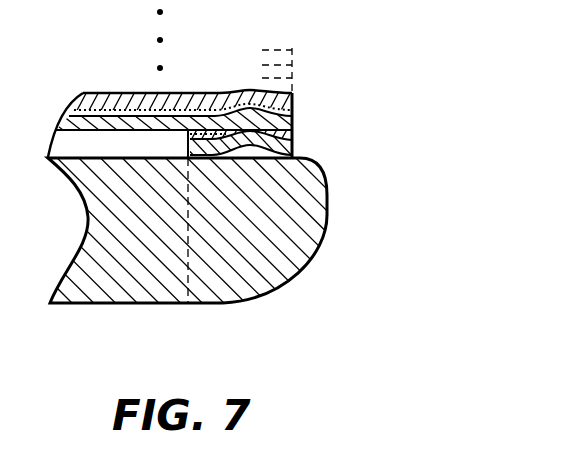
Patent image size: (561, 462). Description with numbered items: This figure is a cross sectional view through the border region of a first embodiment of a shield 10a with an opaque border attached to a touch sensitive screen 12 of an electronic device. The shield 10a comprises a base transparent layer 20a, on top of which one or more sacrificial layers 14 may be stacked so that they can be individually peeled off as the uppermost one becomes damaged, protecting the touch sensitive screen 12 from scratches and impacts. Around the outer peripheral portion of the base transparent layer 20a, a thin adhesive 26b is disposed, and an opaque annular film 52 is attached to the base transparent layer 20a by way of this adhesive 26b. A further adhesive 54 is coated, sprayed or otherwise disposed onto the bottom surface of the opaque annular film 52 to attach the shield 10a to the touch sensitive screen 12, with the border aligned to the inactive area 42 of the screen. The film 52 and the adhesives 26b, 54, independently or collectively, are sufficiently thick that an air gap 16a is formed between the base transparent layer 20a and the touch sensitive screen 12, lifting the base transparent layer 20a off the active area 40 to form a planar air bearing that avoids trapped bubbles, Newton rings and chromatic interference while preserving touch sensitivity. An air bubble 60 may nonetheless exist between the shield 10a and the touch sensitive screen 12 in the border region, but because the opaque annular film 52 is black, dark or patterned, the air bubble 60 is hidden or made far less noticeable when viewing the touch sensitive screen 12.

The shield 10a is at (405, 103).
The touch sensitive screen 12 is at (405, 160).
The sacrificial layer 14 is at (222, 98).
The air gap 16a is at (105, 143).
The base transparent layer 20a is at (295, 122).
The adhesive 26b is at (295, 130).
The active area 40 is at (137, 268).
The inactive area 42 is at (278, 249).
The opaque annular film 52 is at (295, 148).
The adhesive 54 is at (188, 156).
The air bubble 60 is at (239, 160).